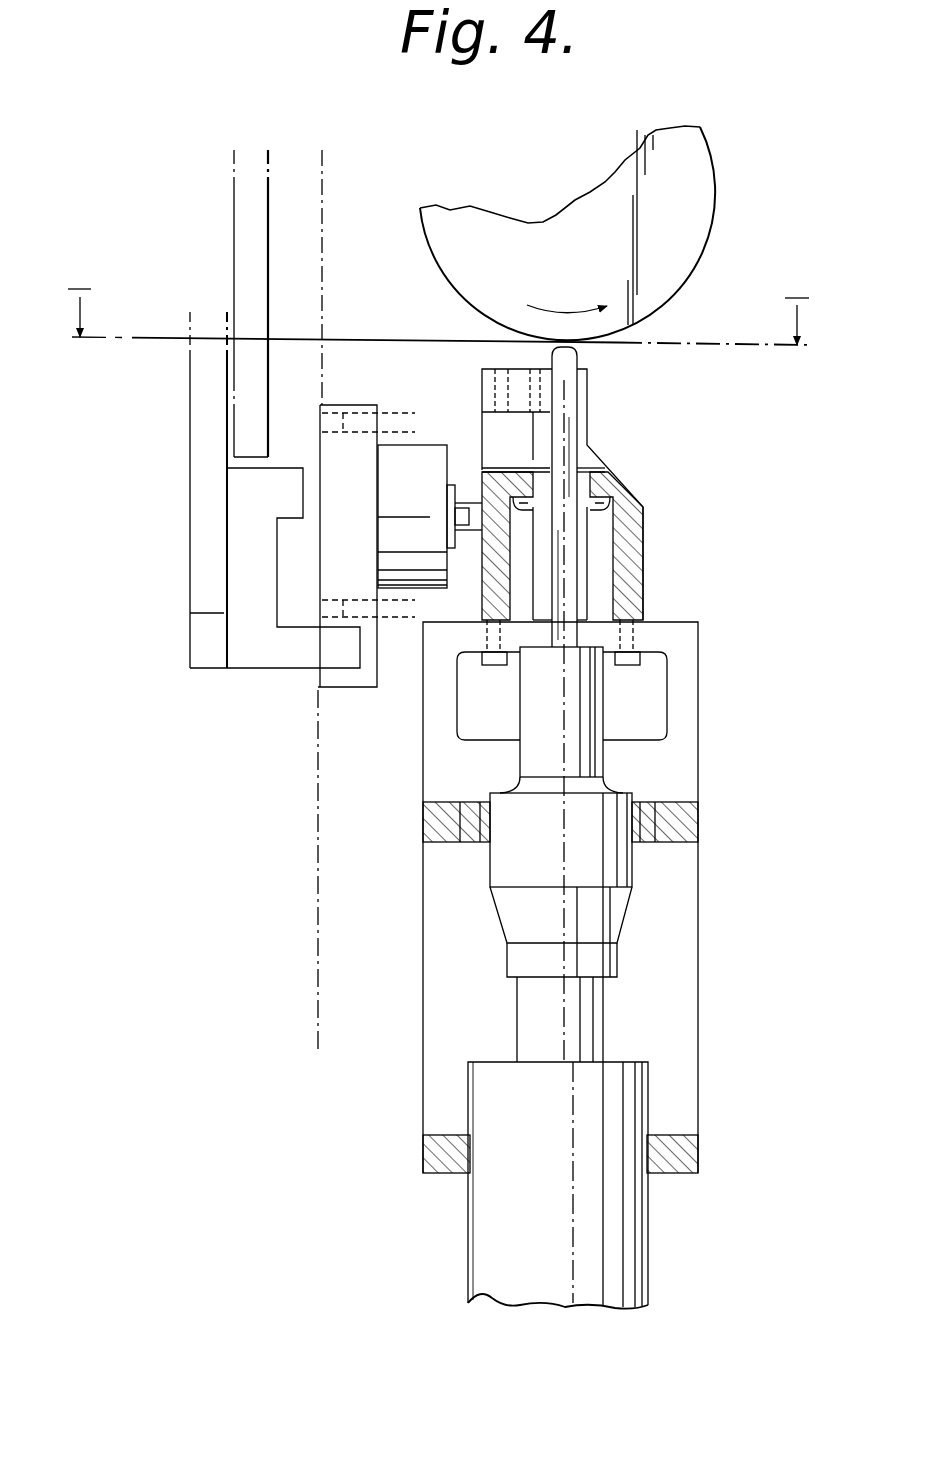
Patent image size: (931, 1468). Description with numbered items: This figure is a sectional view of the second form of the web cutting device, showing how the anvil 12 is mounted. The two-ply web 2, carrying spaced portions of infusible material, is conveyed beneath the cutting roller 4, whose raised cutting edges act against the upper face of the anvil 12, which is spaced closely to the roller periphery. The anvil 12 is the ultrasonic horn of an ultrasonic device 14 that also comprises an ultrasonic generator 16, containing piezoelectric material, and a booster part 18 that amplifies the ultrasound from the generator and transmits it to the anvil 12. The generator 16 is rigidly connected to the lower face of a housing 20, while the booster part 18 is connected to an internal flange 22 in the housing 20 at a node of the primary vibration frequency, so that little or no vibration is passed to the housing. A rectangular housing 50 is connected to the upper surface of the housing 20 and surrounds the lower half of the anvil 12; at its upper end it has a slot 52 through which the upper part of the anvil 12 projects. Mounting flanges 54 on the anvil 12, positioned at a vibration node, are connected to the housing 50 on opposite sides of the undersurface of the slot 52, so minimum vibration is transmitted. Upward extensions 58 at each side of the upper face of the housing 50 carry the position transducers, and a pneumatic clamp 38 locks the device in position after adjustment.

The two-ply web 2 is at (378, 338).
The cutting roller 4 is at (708, 250).
The anvil 12 is at (565, 445).
The ultrasonic device 14 is at (452, 904).
The ultrasonic generator 16 is at (612, 1220).
The booster part 18 is at (566, 854).
The housing 20 is at (698, 960).
The internal flange 22 is at (678, 828).
The pneumatic clamp 38 is at (421, 502).
The rectangular housing 50 is at (630, 572).
The slot 52 is at (590, 462).
The mounting flanges 54 is at (598, 522).
The upward extensions 58 is at (497, 428).